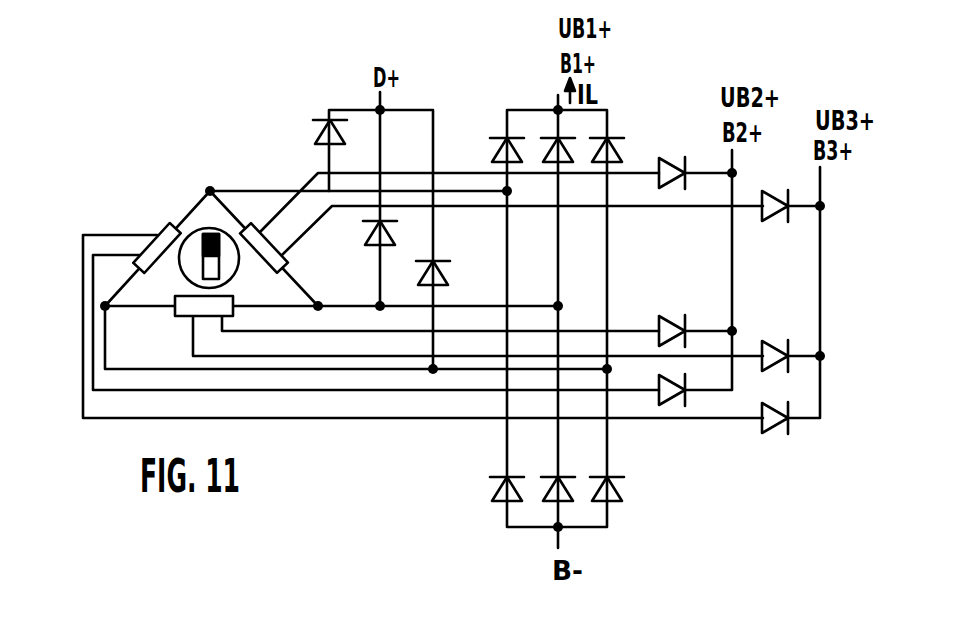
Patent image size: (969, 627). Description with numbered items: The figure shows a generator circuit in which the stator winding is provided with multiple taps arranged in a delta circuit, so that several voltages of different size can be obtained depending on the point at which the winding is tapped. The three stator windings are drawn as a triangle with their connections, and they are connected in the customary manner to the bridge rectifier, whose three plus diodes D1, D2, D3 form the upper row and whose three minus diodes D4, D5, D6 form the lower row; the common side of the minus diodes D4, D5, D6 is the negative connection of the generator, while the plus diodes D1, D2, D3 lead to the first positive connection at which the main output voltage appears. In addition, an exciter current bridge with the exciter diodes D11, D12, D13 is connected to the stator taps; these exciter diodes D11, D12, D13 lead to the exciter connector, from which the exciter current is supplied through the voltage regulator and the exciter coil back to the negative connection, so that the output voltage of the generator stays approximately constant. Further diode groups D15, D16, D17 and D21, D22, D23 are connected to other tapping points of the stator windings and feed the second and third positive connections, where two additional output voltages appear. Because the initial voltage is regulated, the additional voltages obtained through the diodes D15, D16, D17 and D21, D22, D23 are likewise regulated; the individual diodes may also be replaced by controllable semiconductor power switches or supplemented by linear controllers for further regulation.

The plus diode D1 is at (494, 154).
The plus diode D2 is at (546, 153).
The plus diode D3 is at (595, 153).
The minus diode D4 is at (492, 490).
The minus diode D5 is at (543, 490).
The minus diode D6 is at (593, 490).
The exciter diode D11 is at (315, 133).
The exciter diode D12 is at (372, 243).
The exciter diode D13 is at (440, 273).
The auxiliary rectifier diode for output B2+ D15 is at (670, 160).
The auxiliary rectifier diode for output B2+ D16 is at (670, 317).
The auxiliary rectifier diode for output B2+ D17 is at (668, 400).
The auxiliary rectifier diode for output B3+ D21 is at (773, 190).
The auxiliary rectifier diode for output B3+ D22 is at (773, 340).
The auxiliary rectifier diode for output B3+ D23 is at (773, 430).